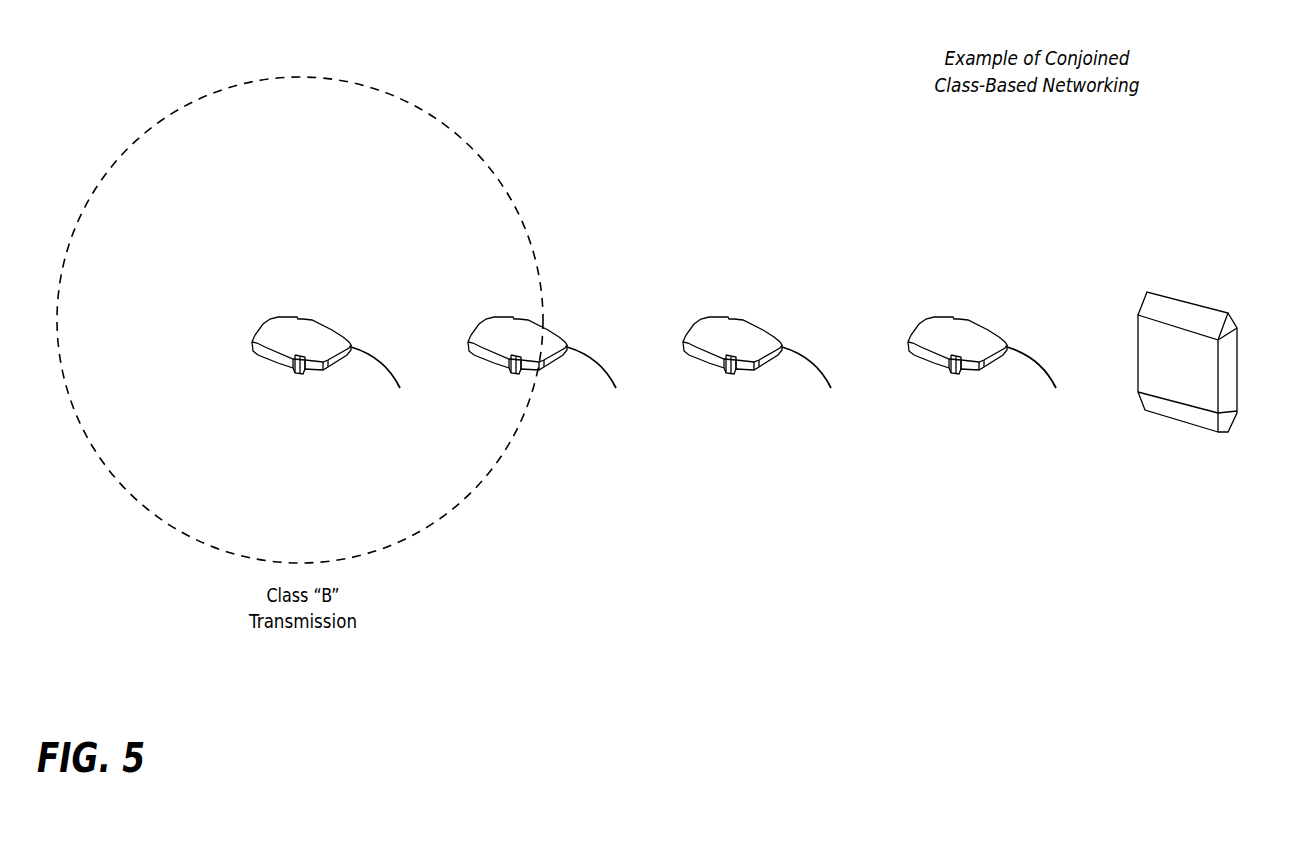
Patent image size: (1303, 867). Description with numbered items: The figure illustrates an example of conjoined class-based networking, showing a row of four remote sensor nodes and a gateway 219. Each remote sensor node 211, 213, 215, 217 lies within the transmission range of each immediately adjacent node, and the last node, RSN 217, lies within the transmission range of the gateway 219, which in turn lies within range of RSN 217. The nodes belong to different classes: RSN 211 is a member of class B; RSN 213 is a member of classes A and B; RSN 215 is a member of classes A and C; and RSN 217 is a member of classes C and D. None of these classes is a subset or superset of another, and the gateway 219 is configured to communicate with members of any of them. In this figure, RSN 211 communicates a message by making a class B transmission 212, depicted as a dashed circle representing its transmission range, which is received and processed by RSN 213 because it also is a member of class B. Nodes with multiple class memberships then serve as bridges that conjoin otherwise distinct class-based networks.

The remote sensor node 211 is at (335, 369).
The class B transmission 212 is at (338, 78).
The remote sensor node 213 is at (552, 369).
The remote sensor node 215 is at (767, 371).
The remote sensor node 217 is at (993, 371).
The gateway 219 is at (1237, 362).